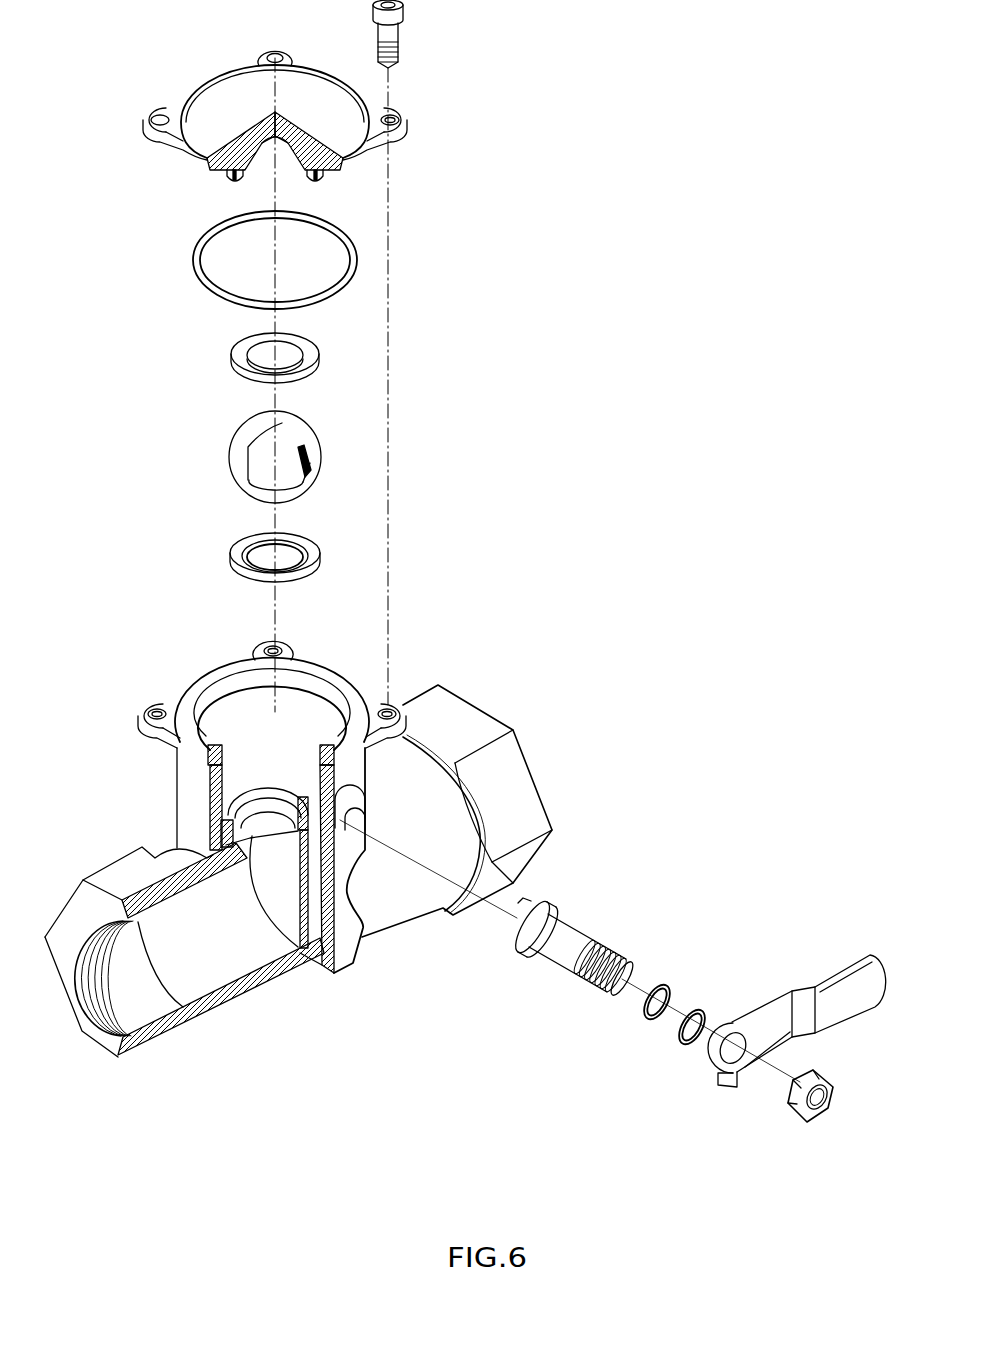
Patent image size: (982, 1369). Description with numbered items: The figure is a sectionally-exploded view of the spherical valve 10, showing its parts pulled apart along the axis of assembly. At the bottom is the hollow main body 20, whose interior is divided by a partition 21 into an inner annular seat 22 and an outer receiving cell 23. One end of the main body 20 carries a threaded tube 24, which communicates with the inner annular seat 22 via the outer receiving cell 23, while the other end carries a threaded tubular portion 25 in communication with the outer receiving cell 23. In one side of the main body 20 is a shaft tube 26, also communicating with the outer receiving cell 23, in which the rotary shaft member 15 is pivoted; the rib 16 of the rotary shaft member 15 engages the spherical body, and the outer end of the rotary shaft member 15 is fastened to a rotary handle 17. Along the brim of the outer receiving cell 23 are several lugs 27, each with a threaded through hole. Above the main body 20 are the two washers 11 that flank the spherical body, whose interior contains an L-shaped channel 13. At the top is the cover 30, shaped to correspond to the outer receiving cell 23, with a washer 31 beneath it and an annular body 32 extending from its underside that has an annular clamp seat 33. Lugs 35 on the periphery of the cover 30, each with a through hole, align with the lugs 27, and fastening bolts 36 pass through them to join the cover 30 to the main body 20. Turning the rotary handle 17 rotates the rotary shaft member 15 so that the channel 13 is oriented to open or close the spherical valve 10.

The spherical valve 10 is at (453, 517).
The washers 11 is at (237, 347).
The L-shaped channel 13 is at (248, 447).
The rotary shaft member 15 is at (577, 940).
The rib 16 is at (530, 905).
The rotary handle 17 is at (800, 997).
The main body 20 is at (217, 667).
The partition 21 is at (237, 793).
The inner annular seat 22 is at (253, 828).
The outer receiving cell 23 is at (318, 708).
The threaded tube 24 is at (118, 1032).
The threaded tubular portion 25 is at (470, 717).
The shaft tube 26 is at (352, 825).
The lugs 27 is at (392, 707).
The cover 30 is at (226, 70).
The washer 31 is at (200, 250).
The annular body 32 is at (230, 174).
The annular clamp seat 33 is at (313, 176).
The lugs 35 is at (399, 114).
The fastening bolts 36 is at (398, 33).